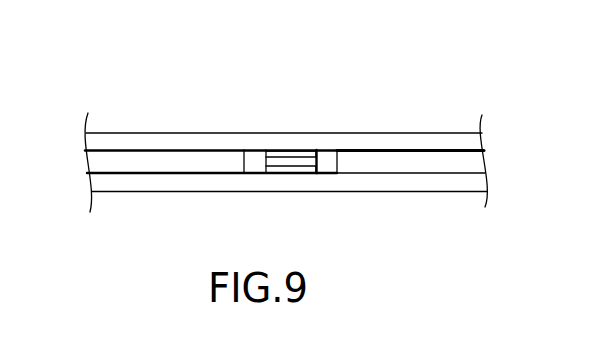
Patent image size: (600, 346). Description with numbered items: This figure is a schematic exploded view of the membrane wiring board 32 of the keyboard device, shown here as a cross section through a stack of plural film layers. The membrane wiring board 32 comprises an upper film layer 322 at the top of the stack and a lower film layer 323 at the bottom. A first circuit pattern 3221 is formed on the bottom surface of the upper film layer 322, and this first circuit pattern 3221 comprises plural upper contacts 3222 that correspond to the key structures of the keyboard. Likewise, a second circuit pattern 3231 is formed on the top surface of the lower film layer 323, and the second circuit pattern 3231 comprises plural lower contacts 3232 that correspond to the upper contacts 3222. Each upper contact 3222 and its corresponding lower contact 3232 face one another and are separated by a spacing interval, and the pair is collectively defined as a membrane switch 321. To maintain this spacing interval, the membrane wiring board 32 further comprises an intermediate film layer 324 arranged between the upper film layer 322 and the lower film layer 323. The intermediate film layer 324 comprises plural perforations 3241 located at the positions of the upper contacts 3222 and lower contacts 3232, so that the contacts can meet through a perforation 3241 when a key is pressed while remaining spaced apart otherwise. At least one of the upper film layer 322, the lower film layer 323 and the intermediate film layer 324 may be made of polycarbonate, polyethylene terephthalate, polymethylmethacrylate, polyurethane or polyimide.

The membrane wiring board 32 is at (190, 65).
The membrane switch 321 is at (421, 80).
The upper film layer 322 is at (172, 136).
The first circuit pattern 3221 is at (368, 151).
The upper contact 3222 is at (293, 154).
The lower film layer 323 is at (144, 180).
The second circuit pattern 3231 is at (210, 174).
The lower contact 3232 is at (293, 170).
The intermediate film layer 324 is at (105, 168).
The perforation 3241 is at (327, 163).